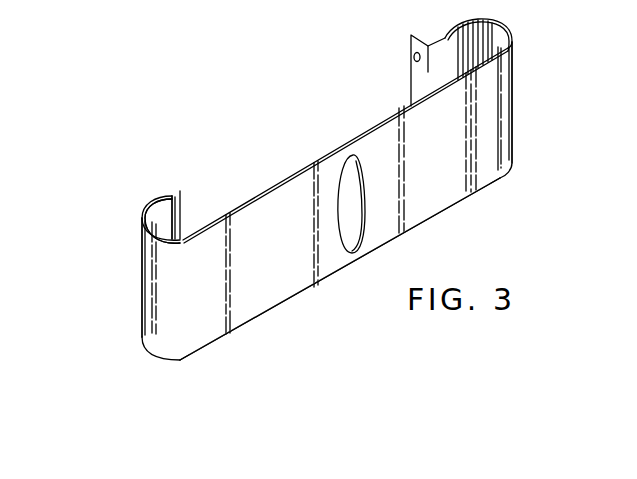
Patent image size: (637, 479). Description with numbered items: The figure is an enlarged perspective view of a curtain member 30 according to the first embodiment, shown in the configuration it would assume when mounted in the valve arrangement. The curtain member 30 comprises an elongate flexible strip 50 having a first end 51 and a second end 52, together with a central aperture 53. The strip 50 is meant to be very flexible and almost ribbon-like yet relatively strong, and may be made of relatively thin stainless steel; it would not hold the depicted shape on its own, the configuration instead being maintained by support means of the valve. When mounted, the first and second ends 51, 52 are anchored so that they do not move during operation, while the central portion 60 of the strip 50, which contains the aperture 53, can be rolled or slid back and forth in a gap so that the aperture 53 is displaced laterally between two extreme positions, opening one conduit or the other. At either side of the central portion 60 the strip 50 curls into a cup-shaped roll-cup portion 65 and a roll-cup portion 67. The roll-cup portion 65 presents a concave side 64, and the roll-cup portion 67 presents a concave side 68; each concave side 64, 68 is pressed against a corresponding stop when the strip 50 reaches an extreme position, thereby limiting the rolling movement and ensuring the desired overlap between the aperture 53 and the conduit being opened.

The curtain member 30 is at (293, 181).
The elongate flexible strip 50 is at (383, 123).
The first end 51 is at (160, 188).
The second end 52 is at (412, 44).
The central aperture 53 is at (347, 178).
The central portion 60 is at (271, 297).
The concave side 64 is at (494, 38).
The roll-cup portion 65 is at (513, 115).
The roll-cup portion 67 is at (155, 285).
The concave side 68 is at (162, 215).